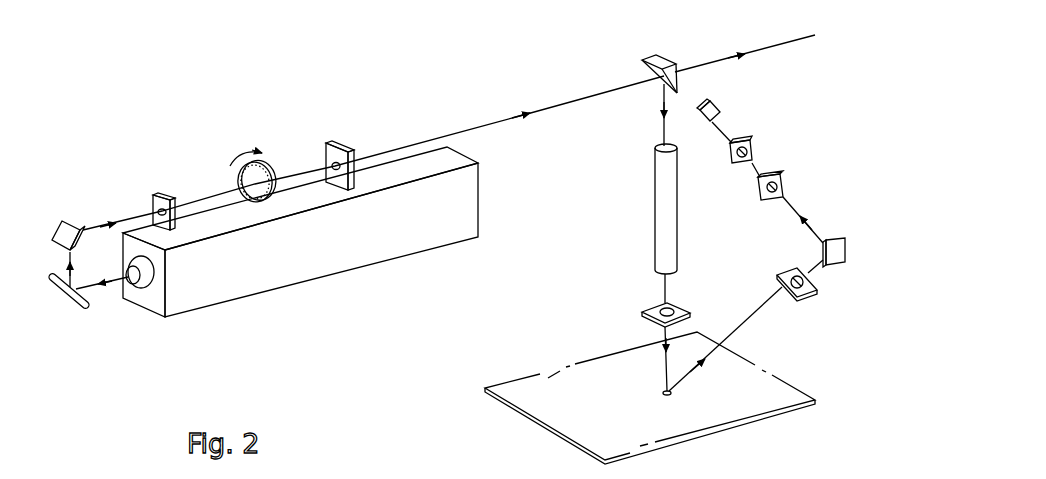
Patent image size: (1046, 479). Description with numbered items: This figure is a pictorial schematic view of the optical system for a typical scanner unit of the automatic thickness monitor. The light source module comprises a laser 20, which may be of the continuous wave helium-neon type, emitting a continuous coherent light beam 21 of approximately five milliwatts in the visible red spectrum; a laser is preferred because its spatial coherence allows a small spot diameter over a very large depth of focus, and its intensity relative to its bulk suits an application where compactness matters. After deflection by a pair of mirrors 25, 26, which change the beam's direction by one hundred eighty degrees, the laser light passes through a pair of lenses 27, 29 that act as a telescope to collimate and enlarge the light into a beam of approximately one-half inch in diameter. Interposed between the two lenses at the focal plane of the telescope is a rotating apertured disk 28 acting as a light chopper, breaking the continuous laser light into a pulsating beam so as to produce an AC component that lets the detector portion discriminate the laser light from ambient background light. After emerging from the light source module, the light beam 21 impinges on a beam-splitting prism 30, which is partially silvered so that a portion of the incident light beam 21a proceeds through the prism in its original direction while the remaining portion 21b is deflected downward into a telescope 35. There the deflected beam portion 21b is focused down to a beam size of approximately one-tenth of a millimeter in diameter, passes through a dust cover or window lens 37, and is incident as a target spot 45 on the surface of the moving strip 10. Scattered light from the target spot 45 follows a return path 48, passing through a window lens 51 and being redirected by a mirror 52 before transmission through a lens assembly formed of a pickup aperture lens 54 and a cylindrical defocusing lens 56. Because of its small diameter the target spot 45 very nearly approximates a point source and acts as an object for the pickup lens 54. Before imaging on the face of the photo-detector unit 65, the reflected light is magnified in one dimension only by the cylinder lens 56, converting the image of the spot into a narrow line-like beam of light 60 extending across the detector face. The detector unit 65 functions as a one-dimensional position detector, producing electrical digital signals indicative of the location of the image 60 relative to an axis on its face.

The moving strip 10 is at (560, 425).
The laser 20 is at (309, 283).
The light beam 21 is at (110, 290).
The incident light beam portion 21a is at (712, 59).
The deflected beam portion 21b is at (662, 138).
The mirror 25 is at (60, 292).
The mirror 26 is at (62, 222).
The lens 27 is at (165, 195).
The rotating apertured disk 28 is at (273, 165).
The lens 29 is at (342, 143).
The beam-splitting prism 30 is at (664, 58).
The telescope 35 is at (657, 240).
The window lens 37 is at (680, 308).
The target spot 45 is at (664, 395).
The reflected light path 48 is at (767, 306).
The window lens 51 is at (817, 291).
The mirror 52 is at (844, 253).
The pickup aperture lens 54 is at (784, 188).
The cylindrical defocusing lens 56 is at (752, 150).
The line-like beam of light 60 is at (718, 121).
The photo-detector unit 65 is at (709, 103).